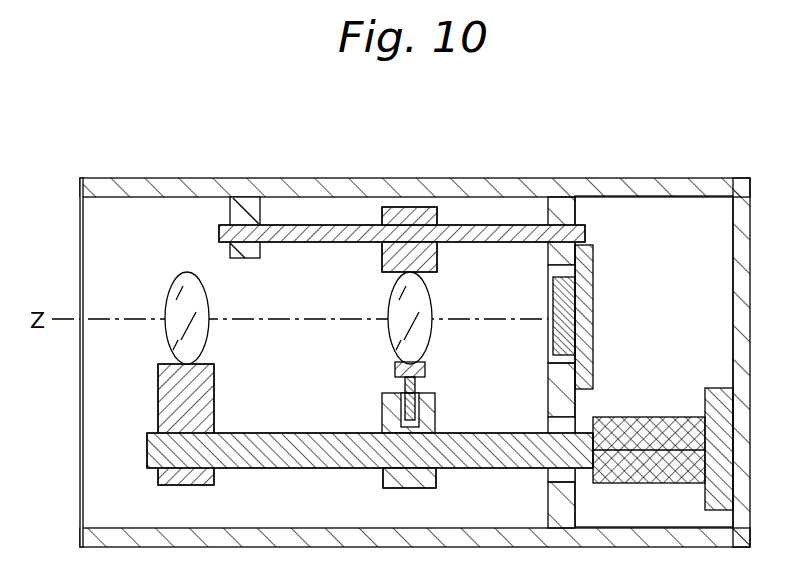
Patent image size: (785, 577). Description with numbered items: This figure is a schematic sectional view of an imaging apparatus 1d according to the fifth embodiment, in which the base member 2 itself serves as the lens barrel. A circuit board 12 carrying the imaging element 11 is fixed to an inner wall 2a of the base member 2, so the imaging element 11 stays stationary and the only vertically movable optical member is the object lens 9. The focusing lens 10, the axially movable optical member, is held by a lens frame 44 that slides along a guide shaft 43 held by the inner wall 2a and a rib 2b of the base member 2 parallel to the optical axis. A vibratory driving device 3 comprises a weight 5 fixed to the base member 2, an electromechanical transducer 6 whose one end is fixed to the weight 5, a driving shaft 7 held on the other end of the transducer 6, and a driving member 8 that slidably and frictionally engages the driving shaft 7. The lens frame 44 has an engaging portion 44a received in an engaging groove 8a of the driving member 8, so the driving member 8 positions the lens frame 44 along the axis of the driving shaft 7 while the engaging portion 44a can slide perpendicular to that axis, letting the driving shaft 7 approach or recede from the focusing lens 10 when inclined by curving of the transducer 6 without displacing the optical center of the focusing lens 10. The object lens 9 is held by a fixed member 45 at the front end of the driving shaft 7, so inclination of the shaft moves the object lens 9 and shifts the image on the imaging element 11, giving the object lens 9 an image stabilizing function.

The imaging apparatus 1d is at (348, 176).
The base member 2 is at (476, 176).
The inner wall 2a is at (547, 256).
The rib 2b is at (230, 210).
The vibratory driving device 3 is at (630, 396).
The weight 5 is at (719, 387).
The electromechanical transducer 6 is at (673, 416).
The driving shaft 7 is at (523, 432).
The driving member 8 is at (381, 481).
The engaging groove 8a is at (418, 386).
The object lens 9 is at (170, 292).
The focusing lens 10 is at (428, 292).
The imaging element 11 is at (553, 332).
The circuit board 12 is at (594, 290).
The guide shaft 43 is at (280, 243).
The lens frame 44 is at (380, 258).
The engaging portion 44a is at (382, 404).
The fixed lens holder 45 is at (215, 396).